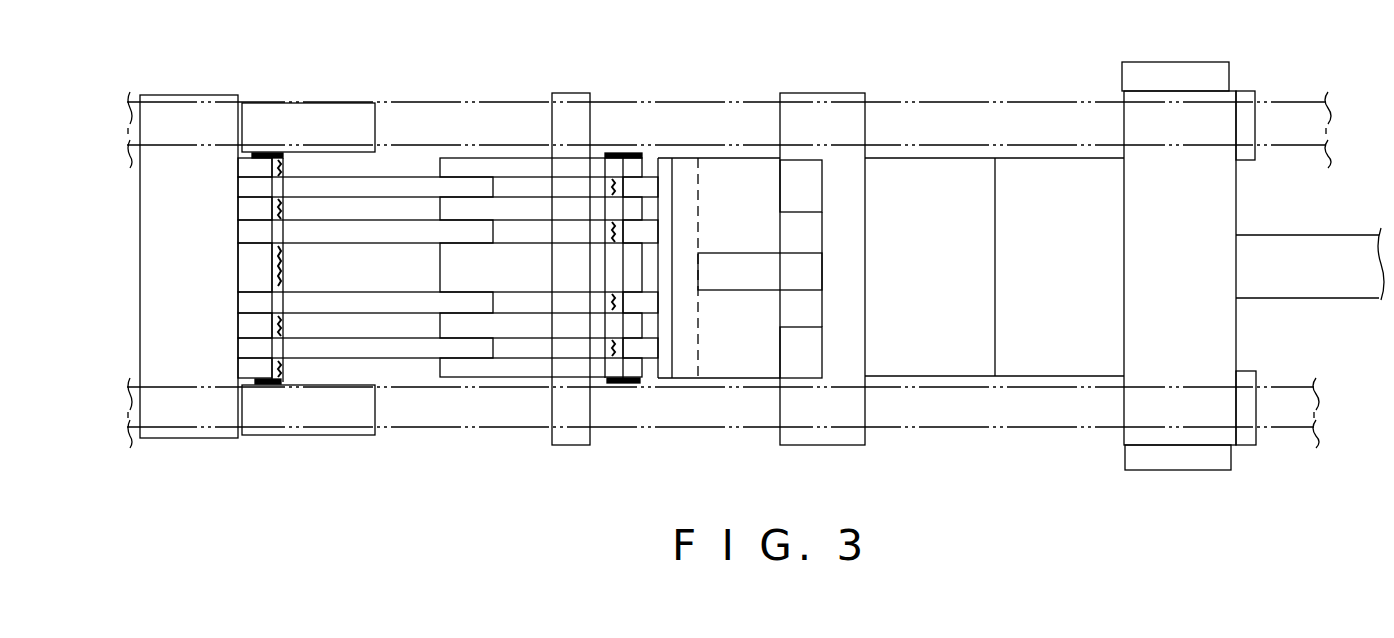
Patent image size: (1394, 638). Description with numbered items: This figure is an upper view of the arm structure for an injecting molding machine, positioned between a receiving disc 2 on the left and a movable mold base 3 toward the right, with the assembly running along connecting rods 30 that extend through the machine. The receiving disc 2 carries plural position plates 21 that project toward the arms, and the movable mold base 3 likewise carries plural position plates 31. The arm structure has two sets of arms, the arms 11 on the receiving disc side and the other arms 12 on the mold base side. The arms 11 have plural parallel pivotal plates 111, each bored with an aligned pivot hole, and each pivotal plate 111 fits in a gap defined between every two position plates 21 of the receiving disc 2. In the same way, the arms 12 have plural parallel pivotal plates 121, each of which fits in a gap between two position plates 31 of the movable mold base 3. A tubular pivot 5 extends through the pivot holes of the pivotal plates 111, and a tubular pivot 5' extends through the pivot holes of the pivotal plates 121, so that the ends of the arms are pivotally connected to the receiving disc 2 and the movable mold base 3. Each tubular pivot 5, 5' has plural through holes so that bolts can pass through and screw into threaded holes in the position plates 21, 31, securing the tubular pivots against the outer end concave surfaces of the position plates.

The receiving disc 2 is at (170, 302).
The position plates 21 is at (252, 168).
The pivotal plates 111 is at (292, 188).
The arms 11 is at (400, 168).
The arms 12 is at (503, 152).
The pivotal plates 121 is at (598, 215).
The position plates 31 is at (640, 188).
The movable mold base 3 is at (803, 95).
The tubular pivot 5 is at (296, 324).
The tubular pivot 5' is at (634, 332).
The connecting rods 30 is at (463, 405).